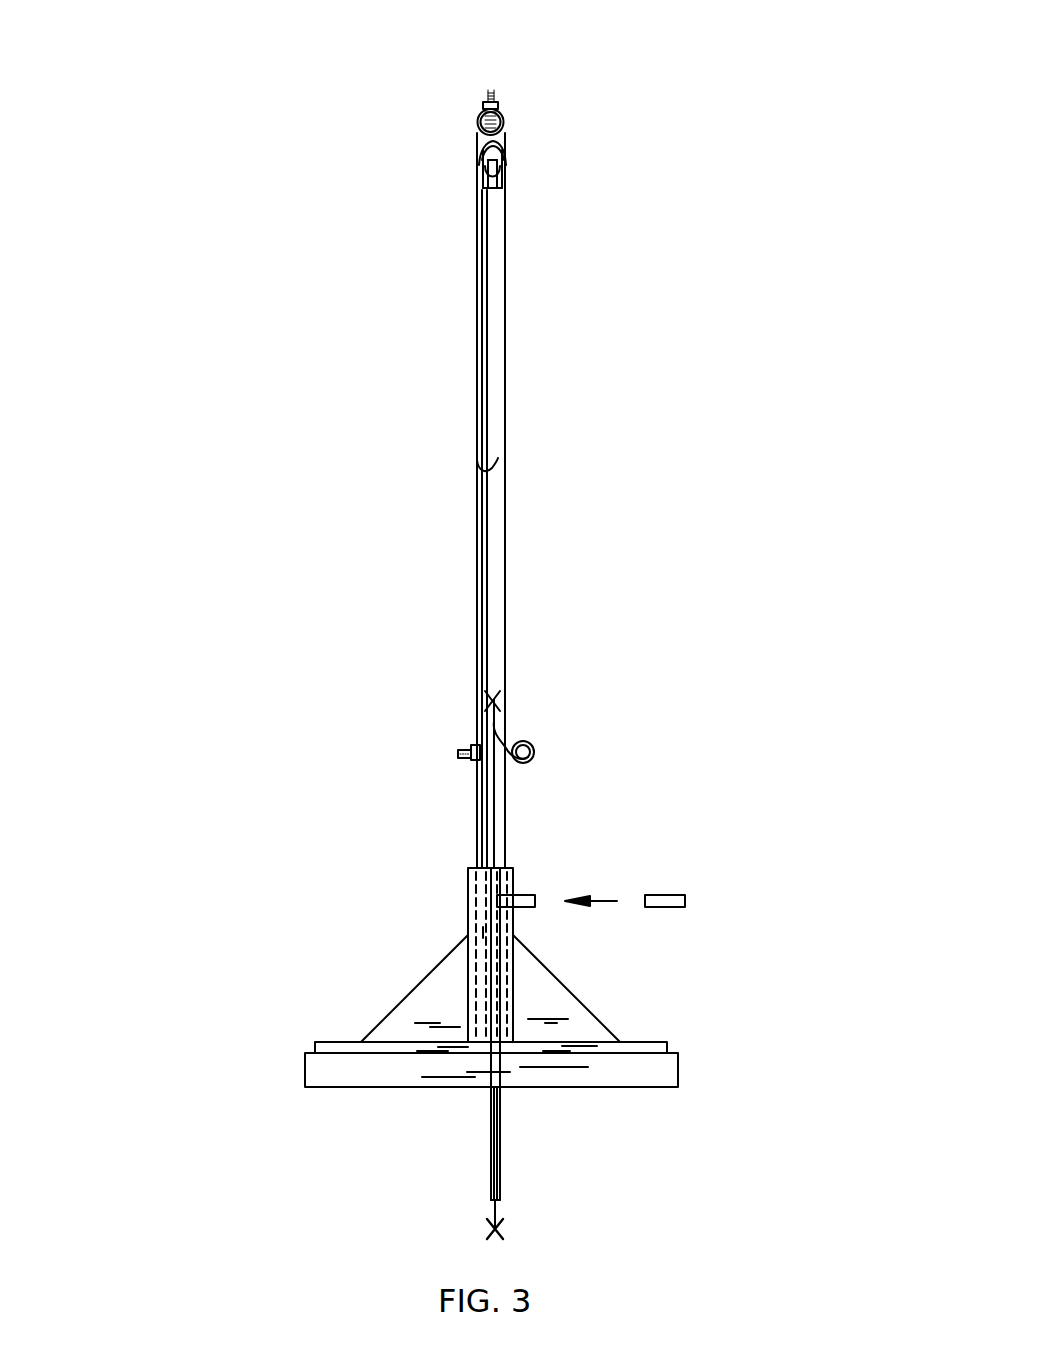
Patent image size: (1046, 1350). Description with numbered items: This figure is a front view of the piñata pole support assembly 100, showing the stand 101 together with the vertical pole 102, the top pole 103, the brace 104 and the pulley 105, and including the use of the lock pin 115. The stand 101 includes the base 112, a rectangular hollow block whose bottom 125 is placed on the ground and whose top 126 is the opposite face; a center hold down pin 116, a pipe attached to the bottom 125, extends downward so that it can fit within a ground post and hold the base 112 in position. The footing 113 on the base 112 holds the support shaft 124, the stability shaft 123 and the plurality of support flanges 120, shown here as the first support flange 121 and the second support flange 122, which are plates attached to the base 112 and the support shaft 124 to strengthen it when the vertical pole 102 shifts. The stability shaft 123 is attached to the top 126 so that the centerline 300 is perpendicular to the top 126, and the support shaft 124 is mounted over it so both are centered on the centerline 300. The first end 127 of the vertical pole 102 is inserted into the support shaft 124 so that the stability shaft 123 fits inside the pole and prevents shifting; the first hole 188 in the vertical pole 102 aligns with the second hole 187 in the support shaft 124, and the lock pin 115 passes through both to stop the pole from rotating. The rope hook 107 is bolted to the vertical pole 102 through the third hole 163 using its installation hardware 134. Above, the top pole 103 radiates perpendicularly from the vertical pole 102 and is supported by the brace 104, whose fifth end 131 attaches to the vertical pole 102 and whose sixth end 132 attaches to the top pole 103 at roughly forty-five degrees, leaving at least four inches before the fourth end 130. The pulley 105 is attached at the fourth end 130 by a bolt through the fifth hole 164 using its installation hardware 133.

The piñata pole support assembly 100 is at (190, 284).
The stand 101 is at (292, 1051).
The vertical pole 102 is at (476, 606).
The top pole 103 is at (504, 122).
The brace 104 is at (500, 323).
The pulley 105 is at (505, 188).
The rope hook 107 is at (536, 753).
The base 112 is at (667, 1042).
The footing 113 is at (580, 993).
The lock pin 115 is at (686, 901).
The center hold down pin 116 is at (501, 1167).
The support flanges 120 is at (412, 975).
The first support flange 121 is at (598, 1028).
The second support flange 122 is at (387, 1012).
The stability shaft 123 is at (484, 928).
The support shaft 124 is at (508, 894).
The bottom 125 is at (390, 1088).
The top 126 is at (326, 1042).
The first end 127 is at (495, 1027).
The fourth end 130 is at (505, 145).
The fifth end 131 is at (497, 465).
The sixth end 132 is at (477, 130).
The installation hardware 133 is at (491, 90).
The installation hardware 134 is at (476, 760).
The third hole 163 is at (497, 722).
The fifth hole 164 is at (480, 745).
The second hole 187 is at (541, 845).
The first hole 188 is at (498, 870).
The centerline 300 is at (498, 717).